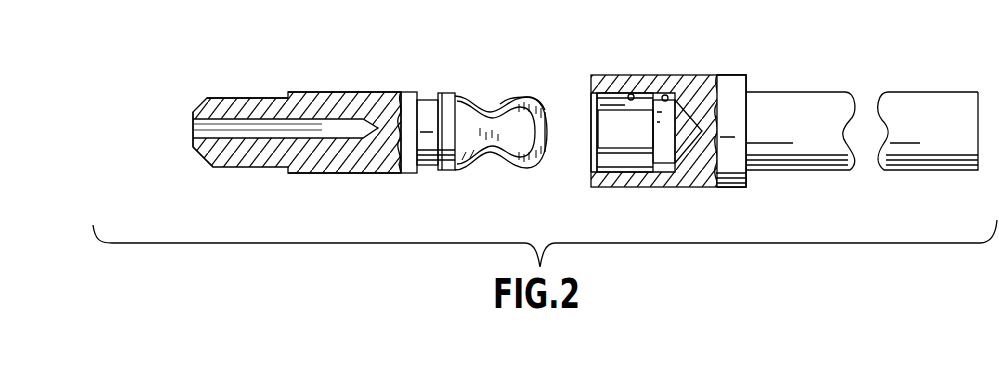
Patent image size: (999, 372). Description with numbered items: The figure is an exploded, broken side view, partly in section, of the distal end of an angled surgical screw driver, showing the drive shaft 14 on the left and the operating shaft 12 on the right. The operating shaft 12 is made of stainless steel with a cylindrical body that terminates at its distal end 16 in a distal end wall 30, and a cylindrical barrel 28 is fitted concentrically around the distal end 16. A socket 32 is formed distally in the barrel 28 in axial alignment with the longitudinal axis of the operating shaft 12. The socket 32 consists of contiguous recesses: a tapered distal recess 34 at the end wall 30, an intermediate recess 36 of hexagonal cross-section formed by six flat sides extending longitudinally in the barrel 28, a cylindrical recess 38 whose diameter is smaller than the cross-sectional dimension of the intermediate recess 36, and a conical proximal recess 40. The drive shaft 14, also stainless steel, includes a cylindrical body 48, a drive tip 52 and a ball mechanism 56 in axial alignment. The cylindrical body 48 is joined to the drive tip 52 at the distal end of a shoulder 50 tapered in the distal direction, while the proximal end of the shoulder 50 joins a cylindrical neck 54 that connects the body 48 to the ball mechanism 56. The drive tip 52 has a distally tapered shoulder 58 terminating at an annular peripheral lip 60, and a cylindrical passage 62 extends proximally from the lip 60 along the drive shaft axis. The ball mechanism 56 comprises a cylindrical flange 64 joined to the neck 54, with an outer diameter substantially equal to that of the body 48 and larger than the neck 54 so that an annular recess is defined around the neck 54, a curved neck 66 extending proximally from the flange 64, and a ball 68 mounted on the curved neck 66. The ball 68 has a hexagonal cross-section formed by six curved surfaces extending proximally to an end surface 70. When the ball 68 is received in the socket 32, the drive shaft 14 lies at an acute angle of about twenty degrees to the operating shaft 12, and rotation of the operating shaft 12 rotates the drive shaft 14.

The operating shaft 12 is at (822, 92).
The drive shaft 14 is at (314, 90).
The distal end 16 is at (601, 75).
The cylindrical barrel 28 is at (712, 75).
The distal end wall 30 is at (597, 172).
The socket 32 is at (632, 160).
The tapered distal recess 34 is at (592, 165).
The intermediate recess 36 is at (632, 94).
The cylindrical recess 38 is at (667, 95).
The conical proximal recess 40 is at (686, 142).
The cylindrical body 48 is at (313, 173).
The shoulder 50 is at (287, 92).
The drive tip 52 is at (233, 97).
The cylindrical neck 54 is at (432, 99).
The ball mechanism 56 is at (496, 170).
The tapered shoulder 58 is at (207, 153).
The peripheral lip 60 is at (193, 147).
The cylindrical passage 62 is at (248, 137).
The cylindrical flange 64 is at (442, 172).
The curved neck 66 is at (483, 108).
The ball 68 is at (513, 99).
The end surface 70 is at (548, 128).